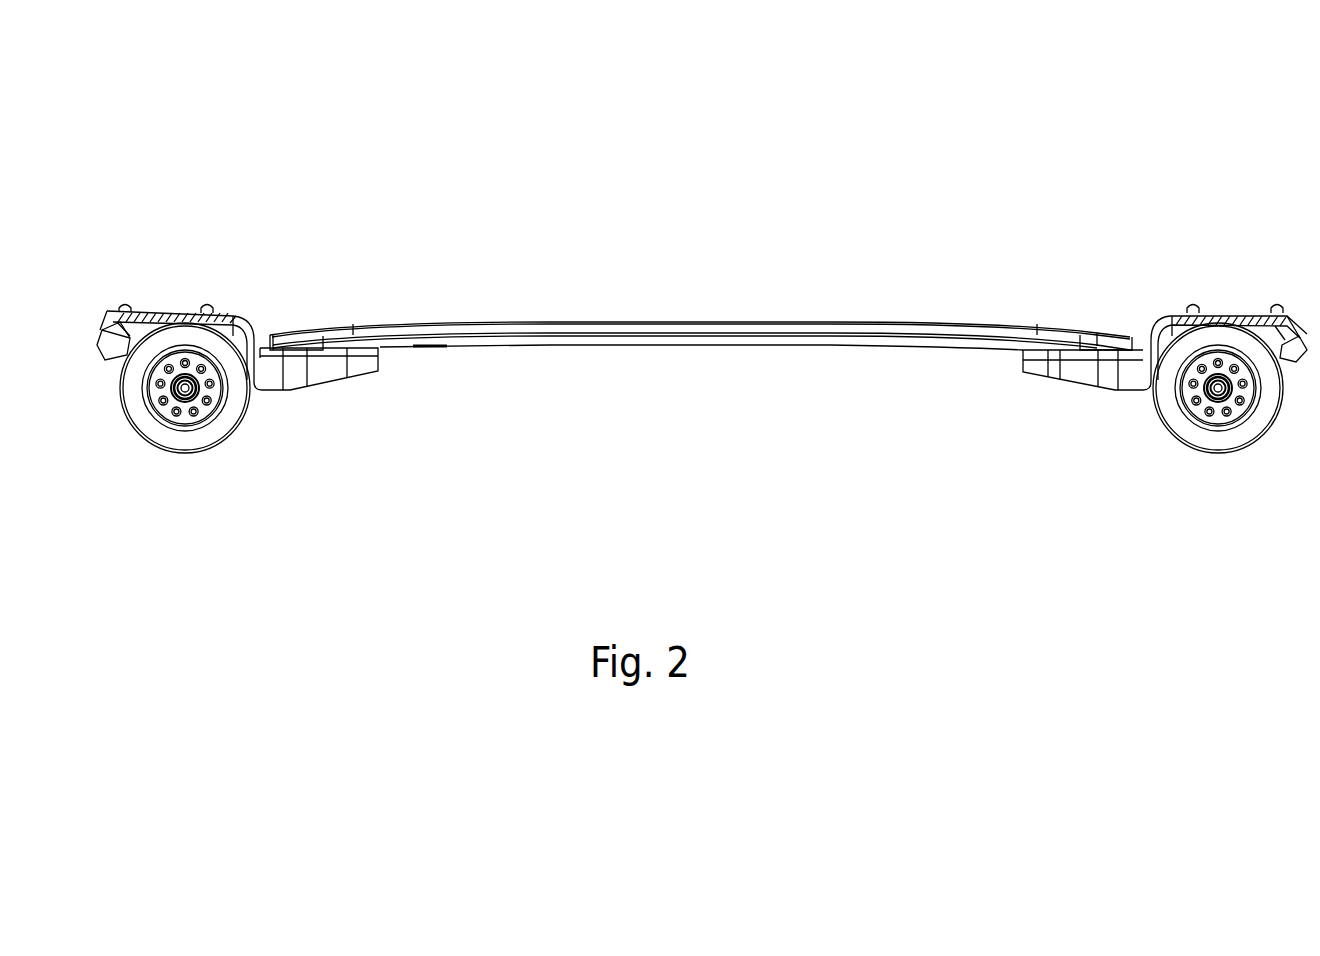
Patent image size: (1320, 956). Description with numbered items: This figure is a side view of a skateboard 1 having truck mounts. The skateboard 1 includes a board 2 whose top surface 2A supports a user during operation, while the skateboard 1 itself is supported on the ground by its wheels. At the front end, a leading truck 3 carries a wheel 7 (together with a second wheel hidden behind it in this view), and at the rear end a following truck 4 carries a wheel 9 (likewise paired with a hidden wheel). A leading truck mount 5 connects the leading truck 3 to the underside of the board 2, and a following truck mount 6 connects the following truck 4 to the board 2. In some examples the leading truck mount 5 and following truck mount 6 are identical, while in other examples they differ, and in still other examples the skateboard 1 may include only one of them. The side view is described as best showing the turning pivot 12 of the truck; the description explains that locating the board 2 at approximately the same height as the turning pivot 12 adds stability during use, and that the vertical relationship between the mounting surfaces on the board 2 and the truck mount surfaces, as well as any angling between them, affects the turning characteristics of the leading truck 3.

The skateboard 1 is at (807, 197).
The board 2 is at (800, 325).
The top surface 2A is at (508, 324).
The leading truck 3 is at (281, 194).
The following truck 4 is at (1164, 207).
The leading truck mount 5 is at (295, 387).
The following truck mount 6 is at (1096, 379).
The wheel 7 is at (158, 431).
The wheel 9 is at (1208, 434).
The turning pivot 12 is at (100, 327).